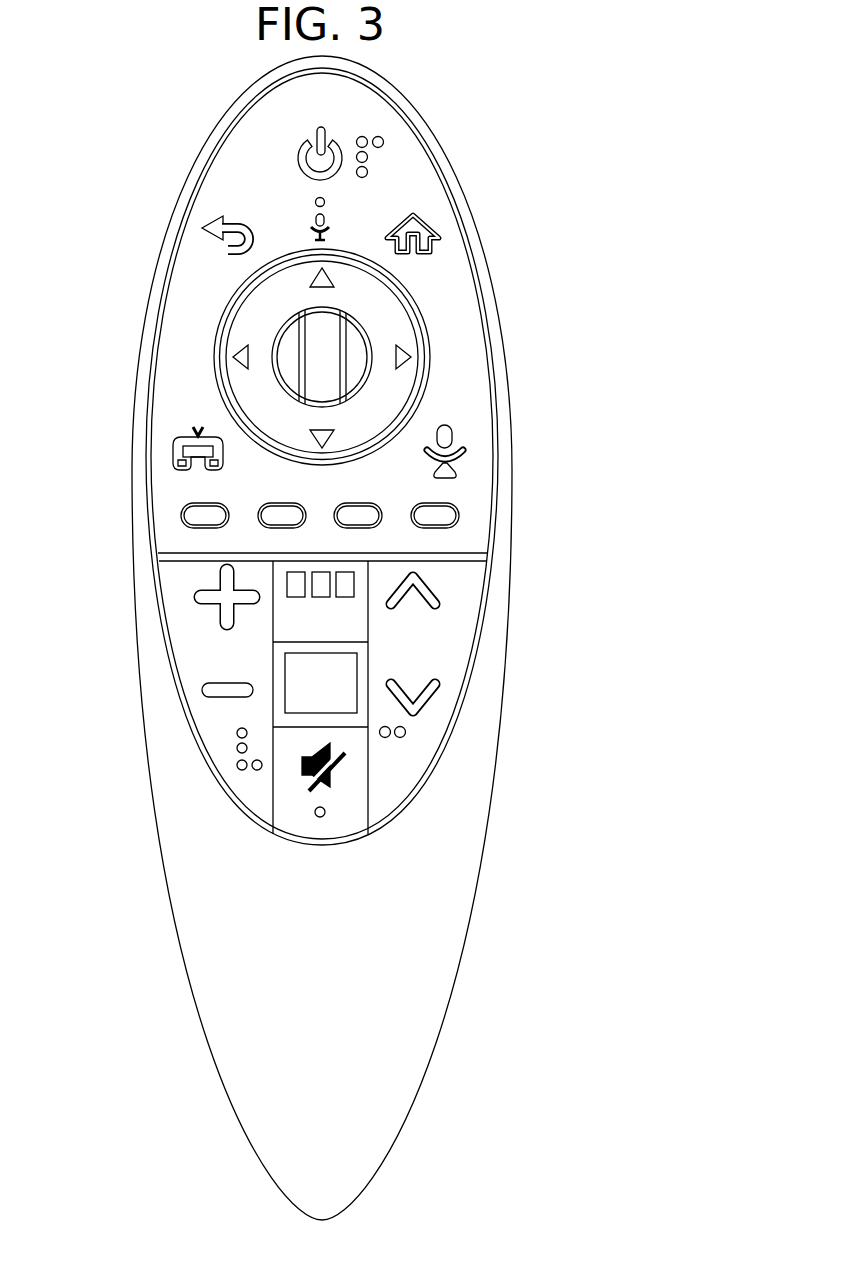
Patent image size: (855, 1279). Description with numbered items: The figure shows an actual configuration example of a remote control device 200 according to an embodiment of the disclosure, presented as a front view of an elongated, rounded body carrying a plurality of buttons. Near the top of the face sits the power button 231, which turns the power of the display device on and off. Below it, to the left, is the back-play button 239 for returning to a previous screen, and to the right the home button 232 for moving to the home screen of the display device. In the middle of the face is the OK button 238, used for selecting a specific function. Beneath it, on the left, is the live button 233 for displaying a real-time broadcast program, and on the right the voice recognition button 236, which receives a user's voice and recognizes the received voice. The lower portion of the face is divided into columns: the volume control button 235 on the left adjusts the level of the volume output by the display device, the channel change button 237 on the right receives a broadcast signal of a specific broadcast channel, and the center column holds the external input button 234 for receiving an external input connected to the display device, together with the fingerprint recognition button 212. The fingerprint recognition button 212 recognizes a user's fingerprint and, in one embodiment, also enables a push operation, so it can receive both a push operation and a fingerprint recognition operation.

The remote control device 200 is at (75, 103).
The fingerprint recognition button 212 is at (337, 715).
The power button 231 is at (338, 147).
The home button 232 is at (428, 223).
The live button 233 is at (177, 455).
The external input button 234 is at (328, 572).
The volume control button 235 is at (175, 660).
The voice recognition button 236 is at (458, 445).
The channel change button 237 is at (453, 632).
The OK button 238 is at (282, 340).
The back-play button 239 is at (213, 240).